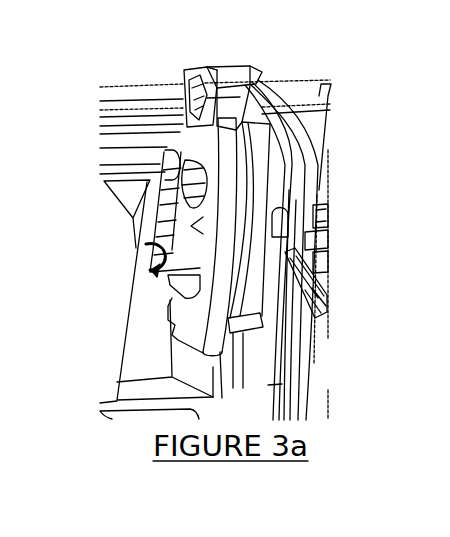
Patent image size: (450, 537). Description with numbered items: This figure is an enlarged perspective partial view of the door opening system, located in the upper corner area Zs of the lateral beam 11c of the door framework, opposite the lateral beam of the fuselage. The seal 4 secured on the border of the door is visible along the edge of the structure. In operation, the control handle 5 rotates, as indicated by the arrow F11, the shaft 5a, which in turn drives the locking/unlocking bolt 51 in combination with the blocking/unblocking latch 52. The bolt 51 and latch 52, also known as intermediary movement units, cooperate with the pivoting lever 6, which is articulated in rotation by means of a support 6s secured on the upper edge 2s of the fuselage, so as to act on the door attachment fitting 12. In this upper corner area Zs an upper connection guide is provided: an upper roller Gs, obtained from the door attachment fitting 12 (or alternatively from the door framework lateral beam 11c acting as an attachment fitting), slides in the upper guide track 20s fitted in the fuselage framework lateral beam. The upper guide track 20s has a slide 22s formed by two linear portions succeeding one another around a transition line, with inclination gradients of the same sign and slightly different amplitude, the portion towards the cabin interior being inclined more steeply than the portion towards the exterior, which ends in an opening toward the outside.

The upper edge of the fuselage 2s is at (127, 105).
The blocking/unblocking latch 52 is at (181, 152).
The pivoting lever 6 is at (246, 84).
The support 6s is at (218, 75).
The control handle 5 is at (123, 148).
The door attachment fitting 12 is at (288, 188).
The seal 4 is at (330, 86).
The slide 22s is at (313, 210).
The upper guide track 20s is at (318, 243).
The upper roller Gs is at (328, 287).
The lateral beam of the door framework 11c is at (268, 385).
The upper corner area Zs is at (167, 225).
The shaft 5a is at (145, 290).
The arrow F11 is at (145, 258).
The locking/unlocking bolt 51 is at (164, 278).